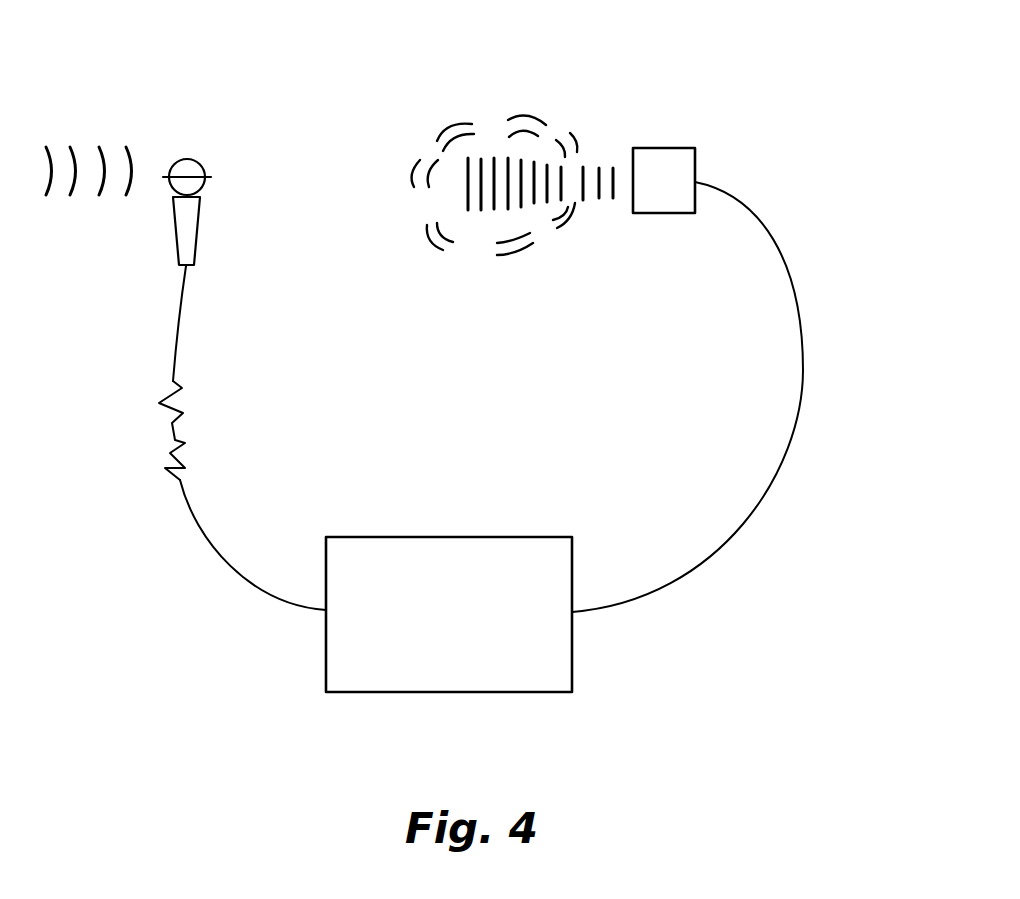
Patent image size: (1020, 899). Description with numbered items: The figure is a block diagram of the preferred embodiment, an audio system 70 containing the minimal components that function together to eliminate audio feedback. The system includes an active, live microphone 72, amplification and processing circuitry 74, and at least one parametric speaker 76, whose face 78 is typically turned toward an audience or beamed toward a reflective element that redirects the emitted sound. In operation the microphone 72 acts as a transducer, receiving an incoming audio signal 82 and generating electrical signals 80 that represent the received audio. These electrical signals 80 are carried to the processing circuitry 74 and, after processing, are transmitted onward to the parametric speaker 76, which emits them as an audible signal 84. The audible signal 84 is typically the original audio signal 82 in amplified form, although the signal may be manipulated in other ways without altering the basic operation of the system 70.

The audio system 70 is at (815, 563).
The microphone 72 is at (200, 223).
The amplification and processing circuitry 74 is at (482, 537).
The parametric speaker 76 is at (695, 160).
The face 78 is at (633, 200).
The electrical signals 80 is at (177, 403).
The audio signal 82 is at (80, 152).
The audible signal 84 is at (533, 117).